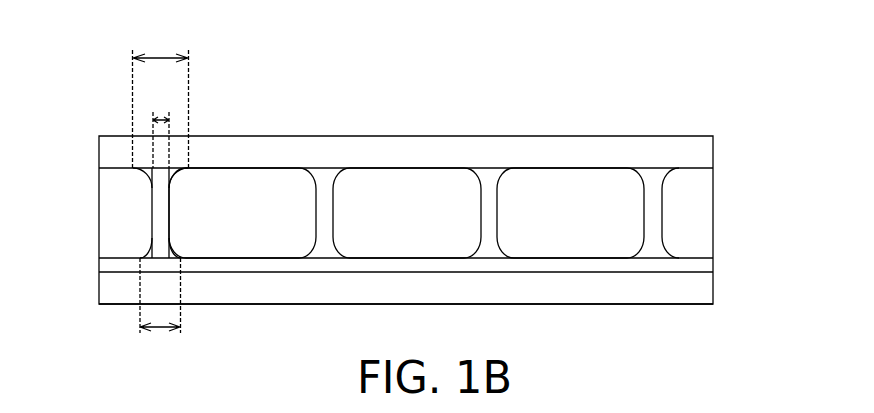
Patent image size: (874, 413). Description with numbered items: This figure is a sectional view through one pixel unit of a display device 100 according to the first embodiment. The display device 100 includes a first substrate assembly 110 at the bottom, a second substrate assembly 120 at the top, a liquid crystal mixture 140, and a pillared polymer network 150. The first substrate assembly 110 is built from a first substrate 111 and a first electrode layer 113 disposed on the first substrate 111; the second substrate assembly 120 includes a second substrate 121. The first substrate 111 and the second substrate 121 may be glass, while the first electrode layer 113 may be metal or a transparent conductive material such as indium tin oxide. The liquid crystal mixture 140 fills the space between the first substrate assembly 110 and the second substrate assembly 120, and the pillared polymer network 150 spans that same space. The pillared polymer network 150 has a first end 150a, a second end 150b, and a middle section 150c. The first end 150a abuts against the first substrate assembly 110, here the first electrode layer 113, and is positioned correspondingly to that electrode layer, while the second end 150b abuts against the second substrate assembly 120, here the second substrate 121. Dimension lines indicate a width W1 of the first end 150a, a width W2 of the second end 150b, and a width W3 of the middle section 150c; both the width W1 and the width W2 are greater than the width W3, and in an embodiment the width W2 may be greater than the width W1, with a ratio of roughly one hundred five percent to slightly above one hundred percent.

The display device 100 is at (69, 33).
The first substrate assembly 110 is at (785, 245).
The first substrate 111 is at (703, 288).
The first electrode layer 113 is at (712, 268).
The second substrate assembly 120 is at (682, 89).
The second substrate 121 is at (703, 153).
The liquid crystal mixture 140 is at (703, 213).
The pillared polymer network 150 is at (160, 210).
The first end 150a is at (157, 257).
The second end 150b is at (154, 171).
The middle section 150c is at (170, 212).
The width of the first end W1 is at (161, 94).
The width of the second end W2 is at (159, 312).
The width of the middle section W3 is at (159, 126).